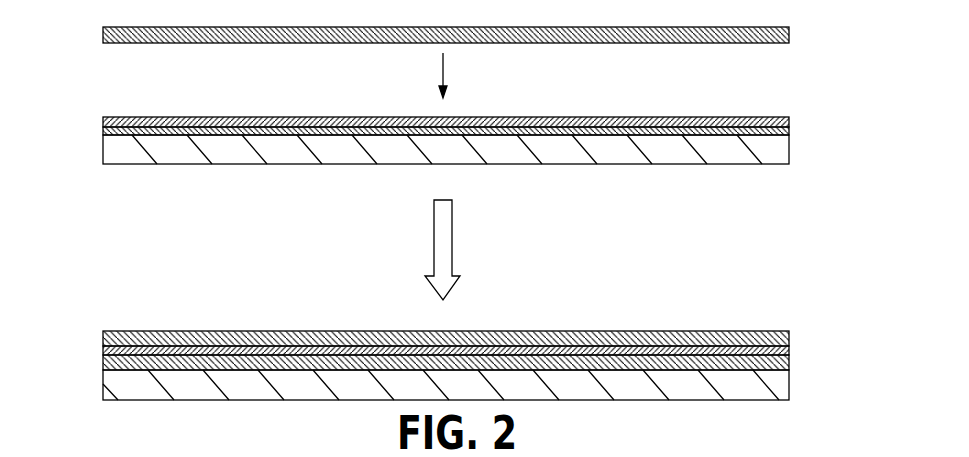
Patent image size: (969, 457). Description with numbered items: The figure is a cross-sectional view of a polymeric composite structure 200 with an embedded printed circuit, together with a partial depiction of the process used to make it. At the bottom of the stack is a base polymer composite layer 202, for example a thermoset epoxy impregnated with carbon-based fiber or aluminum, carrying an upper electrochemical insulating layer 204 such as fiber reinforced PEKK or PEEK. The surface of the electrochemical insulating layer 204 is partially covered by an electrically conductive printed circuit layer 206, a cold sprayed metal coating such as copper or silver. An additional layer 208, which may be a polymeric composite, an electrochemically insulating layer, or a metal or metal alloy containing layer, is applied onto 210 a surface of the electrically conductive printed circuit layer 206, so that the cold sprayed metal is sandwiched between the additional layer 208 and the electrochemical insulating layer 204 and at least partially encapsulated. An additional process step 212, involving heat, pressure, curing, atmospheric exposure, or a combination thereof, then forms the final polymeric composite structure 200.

The polymeric composite structure 200 is at (118, 297).
The base polymer composite layer 202 is at (778, 155).
The electrochemical insulating layer 204 is at (789, 131).
The electrically conductive printed circuit layer 206 is at (789, 122).
The additional layer 208 is at (789, 34).
The applying step 210 is at (443, 77).
The additional process step 212 is at (452, 237).